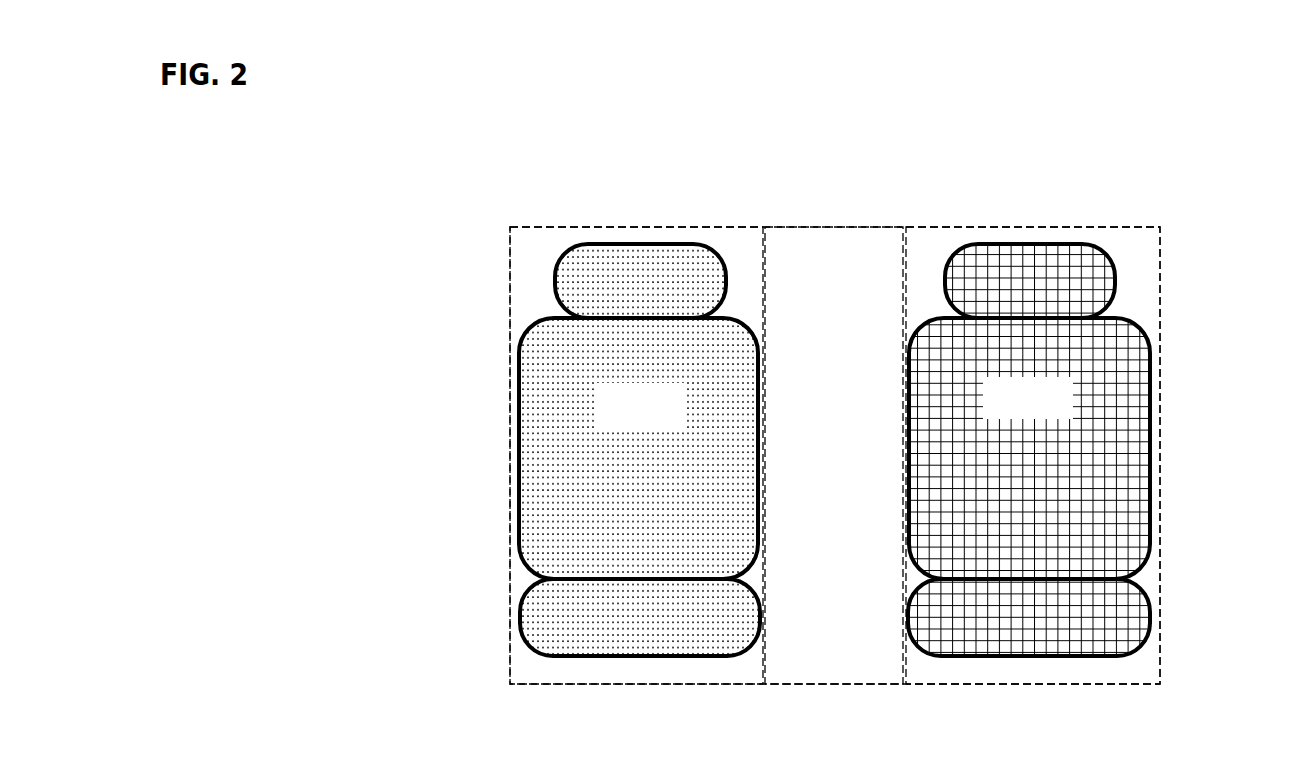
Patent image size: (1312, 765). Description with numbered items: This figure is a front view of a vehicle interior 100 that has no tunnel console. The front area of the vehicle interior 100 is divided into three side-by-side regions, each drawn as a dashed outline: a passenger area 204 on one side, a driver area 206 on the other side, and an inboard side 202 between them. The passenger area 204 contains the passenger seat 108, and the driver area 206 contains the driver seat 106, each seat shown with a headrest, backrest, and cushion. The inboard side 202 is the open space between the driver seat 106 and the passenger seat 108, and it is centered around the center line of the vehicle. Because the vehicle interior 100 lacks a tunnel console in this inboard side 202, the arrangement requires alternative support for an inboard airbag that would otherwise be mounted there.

The vehicle interior 100 is at (1173, 153).
The inboard side 202 is at (812, 227).
The passenger area 204 is at (510, 437).
The driver area 206 is at (1162, 437).
The passenger seat 108 is at (663, 422).
The driver seat 106 is at (1053, 413).